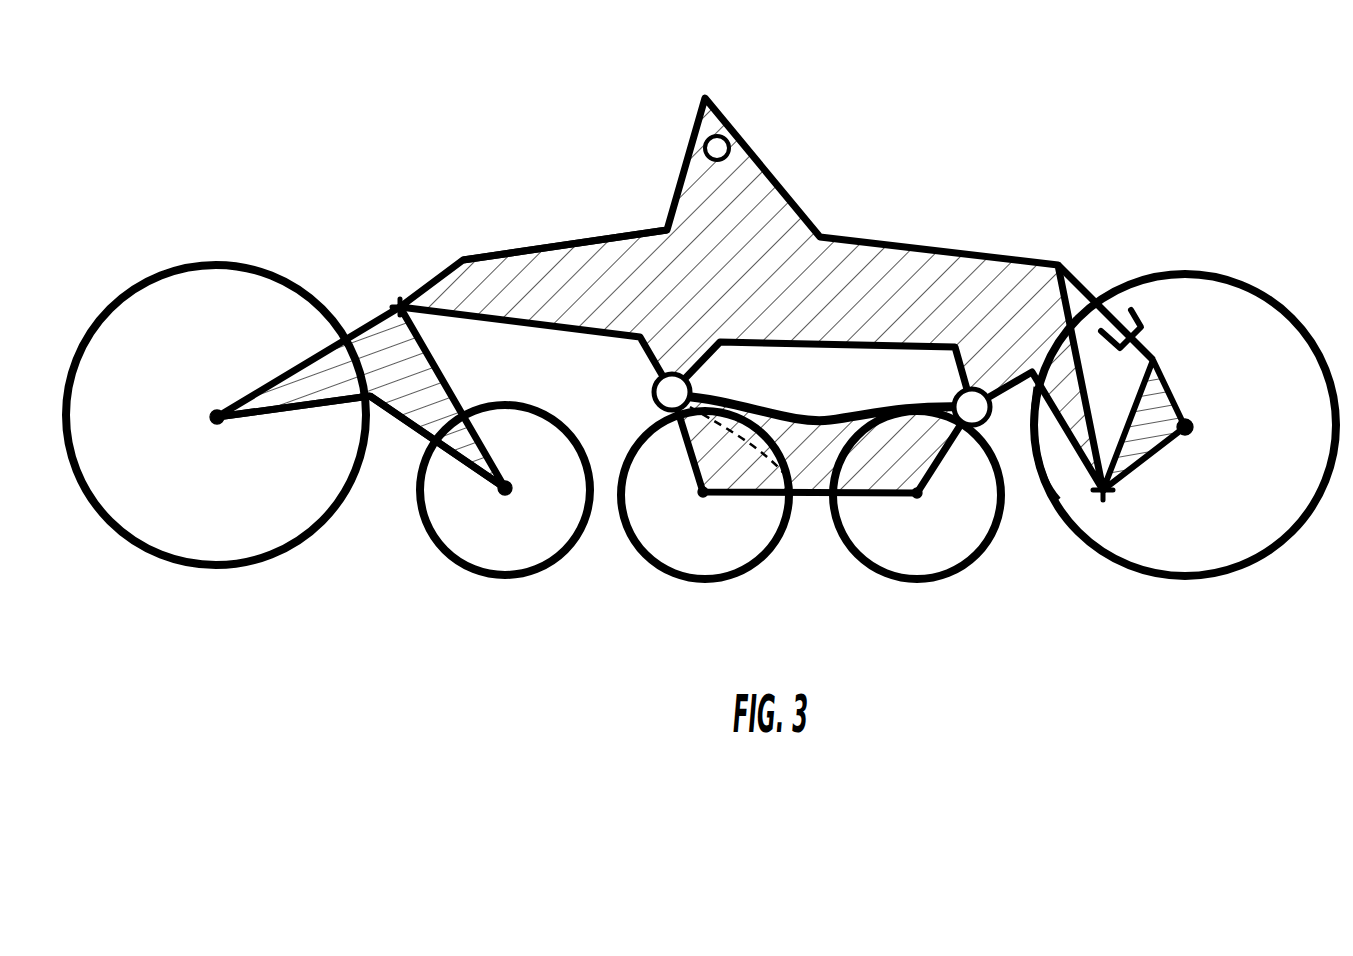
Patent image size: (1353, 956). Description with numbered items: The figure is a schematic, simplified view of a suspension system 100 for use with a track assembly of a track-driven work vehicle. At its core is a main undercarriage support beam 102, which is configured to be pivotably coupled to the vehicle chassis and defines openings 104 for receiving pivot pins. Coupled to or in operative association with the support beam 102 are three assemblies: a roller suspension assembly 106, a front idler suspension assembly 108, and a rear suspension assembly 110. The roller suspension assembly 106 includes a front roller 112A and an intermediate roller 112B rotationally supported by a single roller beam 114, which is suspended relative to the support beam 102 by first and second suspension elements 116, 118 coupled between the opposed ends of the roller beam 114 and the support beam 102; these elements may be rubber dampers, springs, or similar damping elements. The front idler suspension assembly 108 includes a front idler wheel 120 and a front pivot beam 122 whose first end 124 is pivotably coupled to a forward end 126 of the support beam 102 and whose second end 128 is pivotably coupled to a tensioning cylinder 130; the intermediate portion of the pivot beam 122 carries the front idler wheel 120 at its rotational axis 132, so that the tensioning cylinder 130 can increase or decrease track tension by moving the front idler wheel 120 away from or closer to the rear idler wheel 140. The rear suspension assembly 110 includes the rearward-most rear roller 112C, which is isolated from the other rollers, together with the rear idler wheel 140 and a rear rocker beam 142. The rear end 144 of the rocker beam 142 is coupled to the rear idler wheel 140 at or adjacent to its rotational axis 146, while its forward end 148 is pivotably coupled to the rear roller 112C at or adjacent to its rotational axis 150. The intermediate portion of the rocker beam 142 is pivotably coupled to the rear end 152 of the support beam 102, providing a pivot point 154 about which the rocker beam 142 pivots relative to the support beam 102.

The suspension system 100 is at (1080, 62).
The main undercarriage support beam 102 is at (818, 206).
The openings 104 is at (704, 148).
The roller suspension assembly 106 is at (970, 610).
The front idler suspension assembly 108 is at (1148, 214).
The rear suspension assembly 110 is at (320, 214).
The front roller 112A is at (900, 552).
The intermediate roller 112B is at (700, 552).
The rear roller 112C is at (510, 550).
The roller beam 114 is at (810, 475).
The first suspension element 116 is at (956, 402).
The second suspension element 118 is at (656, 391).
The front idler wheel 120 is at (1243, 540).
The front pivot beam 122 is at (1182, 392).
The first end 124 is at (1128, 478).
The forward end 126 is at (1087, 437).
The second end 128 is at (1160, 358).
The tensioning cylinder 130 is at (1088, 283).
The rotational axis 132 is at (1192, 432).
The rear idler wheel 140 is at (135, 500).
The rear rocker beam 142 is at (452, 354).
The rear end 144 is at (250, 395).
The rotational axis 146 is at (212, 415).
The forward end 148 is at (470, 440).
The rotational axis 150 is at (498, 495).
The rear end 152 is at (455, 290).
The pivot point 154 is at (396, 303).